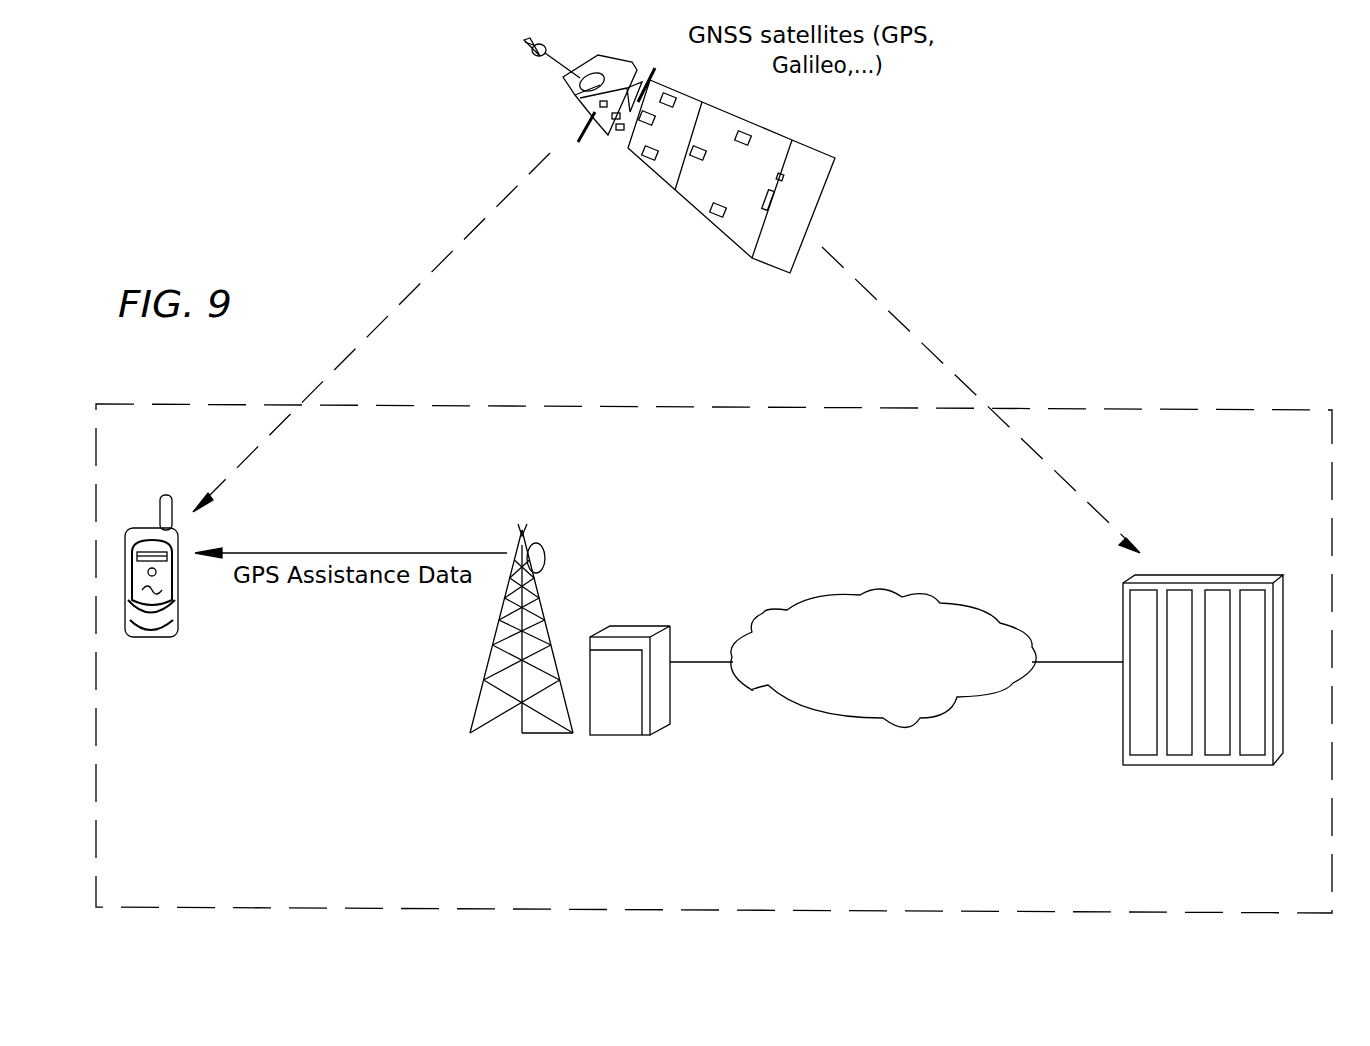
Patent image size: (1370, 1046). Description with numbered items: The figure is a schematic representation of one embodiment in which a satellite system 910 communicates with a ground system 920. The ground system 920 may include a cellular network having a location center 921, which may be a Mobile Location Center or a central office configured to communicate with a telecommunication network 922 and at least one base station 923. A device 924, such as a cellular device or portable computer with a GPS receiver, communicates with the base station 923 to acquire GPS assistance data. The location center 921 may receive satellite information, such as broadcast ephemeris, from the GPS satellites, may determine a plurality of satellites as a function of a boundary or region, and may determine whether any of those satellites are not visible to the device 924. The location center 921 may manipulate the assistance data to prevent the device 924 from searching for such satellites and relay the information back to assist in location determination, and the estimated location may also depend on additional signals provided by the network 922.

The satellite system 910 is at (858, 212).
The ground system 920 is at (1153, 408).
The location center 921 is at (1187, 557).
The telecommunication network 922 is at (845, 590).
The base station 923 is at (543, 533).
The device 924 is at (143, 518).